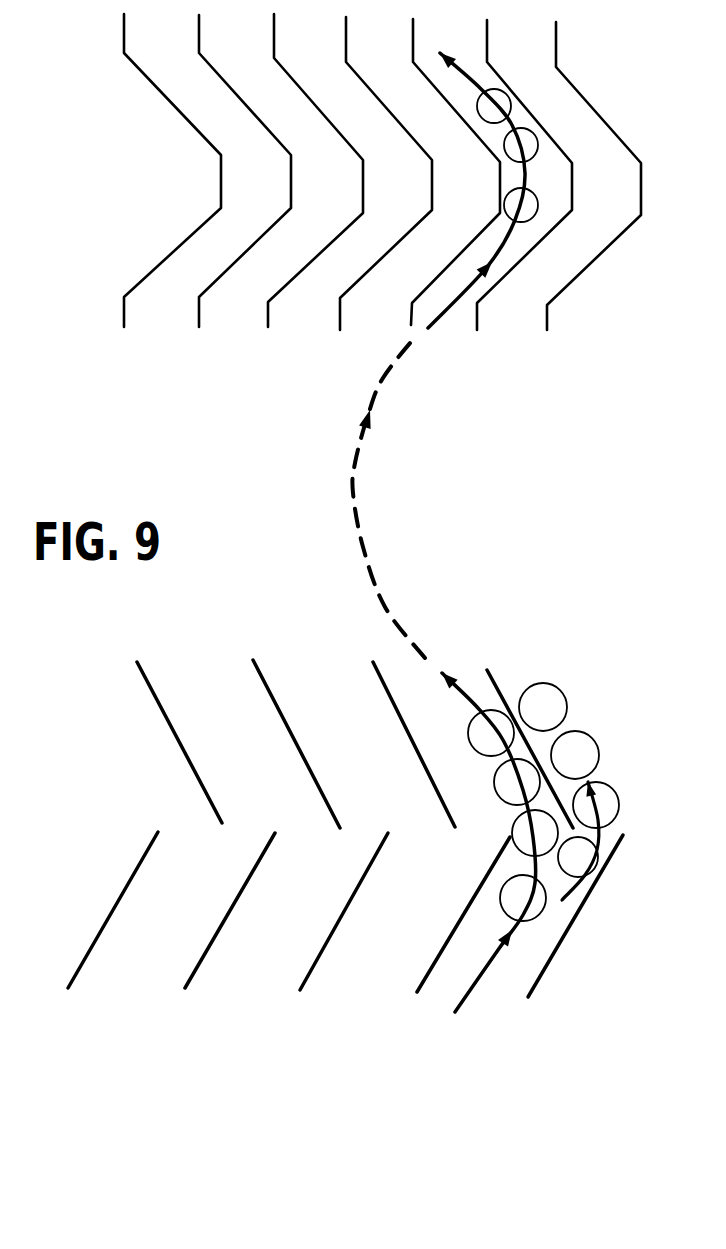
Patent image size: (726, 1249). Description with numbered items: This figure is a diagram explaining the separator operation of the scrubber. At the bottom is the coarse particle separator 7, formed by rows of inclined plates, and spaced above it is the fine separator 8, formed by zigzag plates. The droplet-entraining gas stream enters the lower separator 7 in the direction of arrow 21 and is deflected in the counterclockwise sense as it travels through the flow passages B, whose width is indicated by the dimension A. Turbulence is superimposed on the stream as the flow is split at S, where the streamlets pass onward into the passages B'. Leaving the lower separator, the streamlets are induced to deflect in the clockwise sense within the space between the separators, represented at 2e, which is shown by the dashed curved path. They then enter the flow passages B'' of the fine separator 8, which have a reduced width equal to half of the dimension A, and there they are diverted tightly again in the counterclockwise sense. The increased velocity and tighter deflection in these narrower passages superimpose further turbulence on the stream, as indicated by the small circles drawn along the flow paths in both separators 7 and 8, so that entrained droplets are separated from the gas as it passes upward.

The fine separator 8 is at (350, 172).
The coarse particle separator 7 is at (345, 828).
The space between the separators 2e is at (214, 488).
The gas stream entry direction arrow 21 is at (397, 1020).
The flow passage width A is at (299, 998).
The flow passages B is at (483, 872).
The flow passages (streamlet passages) B' is at (361, 659).
The flow passages (upper separator passages) B'' is at (476, 235).
The flow split point S is at (580, 885).